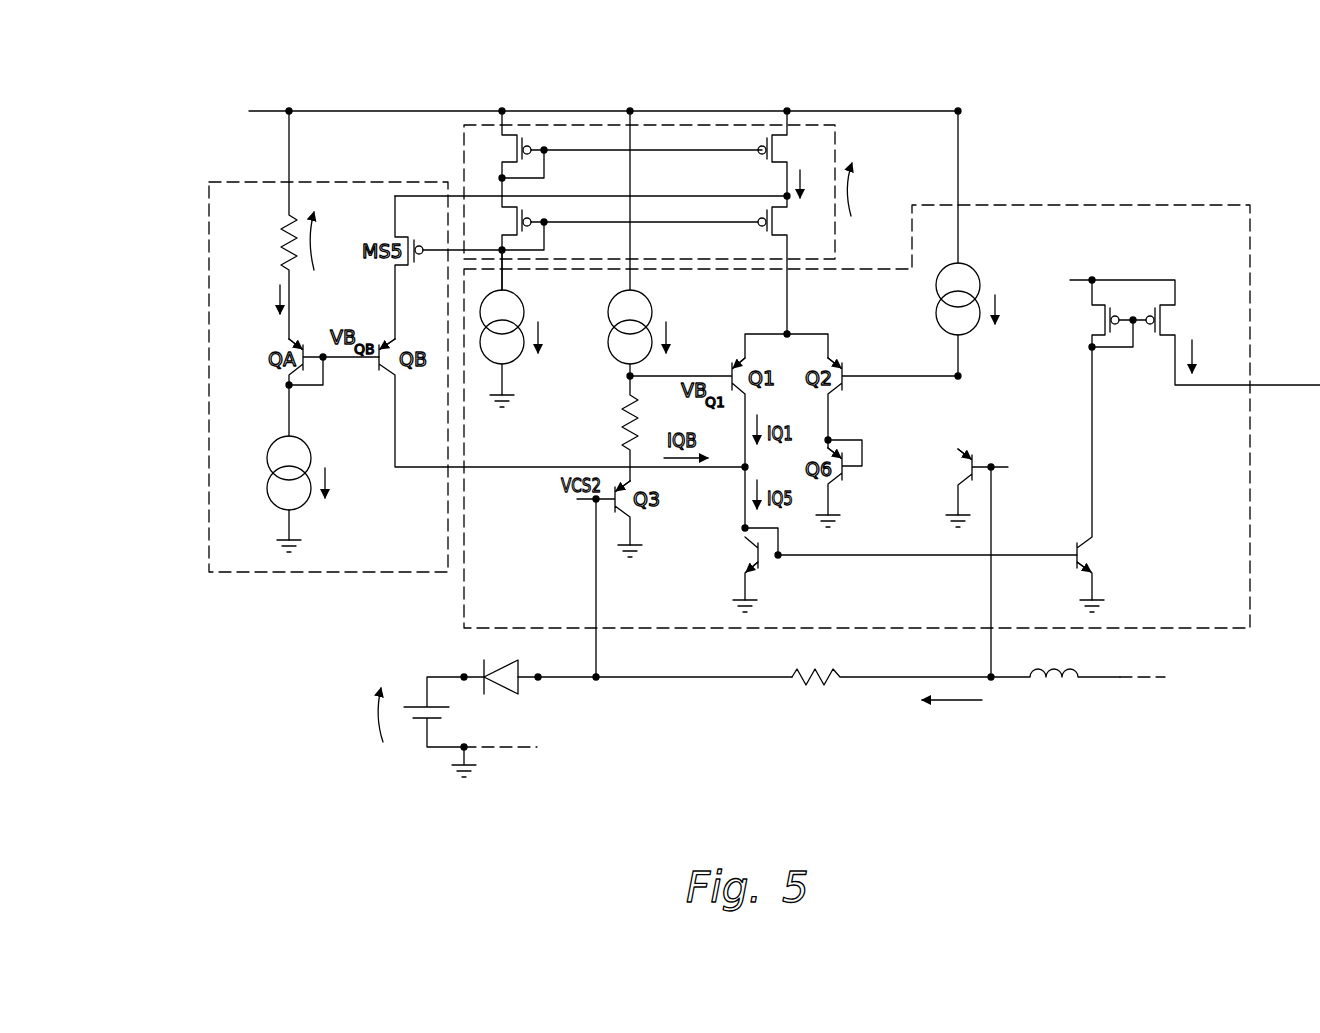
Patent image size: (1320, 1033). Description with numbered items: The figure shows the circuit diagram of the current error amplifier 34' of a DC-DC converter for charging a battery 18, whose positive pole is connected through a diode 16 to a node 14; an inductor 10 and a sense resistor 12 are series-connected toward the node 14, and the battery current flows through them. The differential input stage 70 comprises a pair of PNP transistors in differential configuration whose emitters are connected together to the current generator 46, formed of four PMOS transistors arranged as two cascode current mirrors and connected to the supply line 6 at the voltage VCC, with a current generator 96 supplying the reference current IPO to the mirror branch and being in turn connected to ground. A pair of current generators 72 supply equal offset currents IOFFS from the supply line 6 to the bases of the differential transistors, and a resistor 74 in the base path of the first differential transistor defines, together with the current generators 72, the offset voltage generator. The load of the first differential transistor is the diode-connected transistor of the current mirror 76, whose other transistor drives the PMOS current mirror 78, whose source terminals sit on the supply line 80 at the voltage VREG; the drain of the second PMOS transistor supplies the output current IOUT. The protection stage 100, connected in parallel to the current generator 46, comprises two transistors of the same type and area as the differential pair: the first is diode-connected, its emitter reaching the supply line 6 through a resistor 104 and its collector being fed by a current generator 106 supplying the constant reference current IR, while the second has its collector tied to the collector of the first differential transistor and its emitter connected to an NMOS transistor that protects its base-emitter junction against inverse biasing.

The supply line 6 is at (388, 111).
The current generator 46 is at (456, 151).
The protection stage 100 is at (207, 206).
The resistor 104 is at (288, 260).
The current generator 106 is at (279, 448).
The current generator 96 is at (515, 310).
The current generators 72 is at (643, 310).
The resistor 74 is at (628, 432).
The current mirror 76 is at (873, 576).
The differential input stage 70 is at (978, 409).
The current mirror 78 is at (1137, 383).
The supply line 80 is at (1144, 280).
The current error amplifier 34' is at (870, 391).
The battery 18 is at (417, 704).
The diode 16 is at (519, 667).
The node 14 is at (598, 680).
The sense resistor 12 is at (832, 668).
The inductor 10 is at (1060, 670).